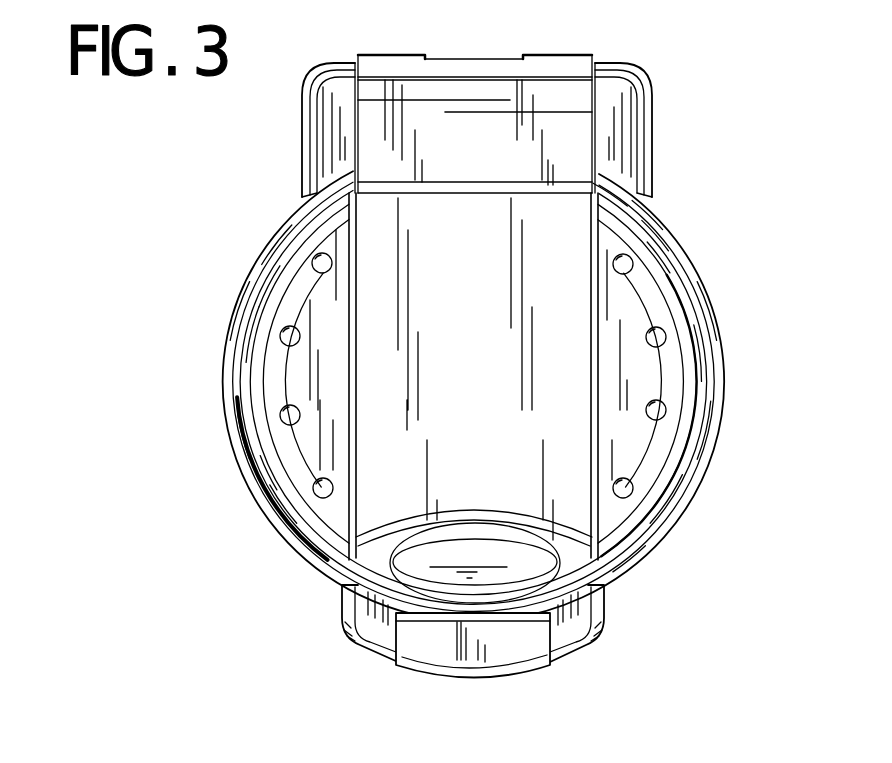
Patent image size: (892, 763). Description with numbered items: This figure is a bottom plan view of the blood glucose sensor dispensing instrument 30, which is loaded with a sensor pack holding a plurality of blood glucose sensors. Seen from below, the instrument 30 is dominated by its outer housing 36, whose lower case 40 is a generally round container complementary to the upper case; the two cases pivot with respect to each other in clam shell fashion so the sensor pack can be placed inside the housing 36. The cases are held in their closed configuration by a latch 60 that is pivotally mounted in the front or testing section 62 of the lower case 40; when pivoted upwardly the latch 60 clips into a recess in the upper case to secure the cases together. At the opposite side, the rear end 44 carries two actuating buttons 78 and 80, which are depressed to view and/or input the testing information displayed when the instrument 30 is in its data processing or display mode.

The blood glucose sensor dispensing instrument 30 is at (797, 367).
The outer housing 36 is at (250, 505).
The lower case 40 is at (704, 440).
The rear end 44 is at (328, 64).
The latch 60 is at (525, 643).
The front or testing section 62 is at (603, 650).
The actuating button 78 is at (545, 55).
The actuating button 80 is at (388, 55).